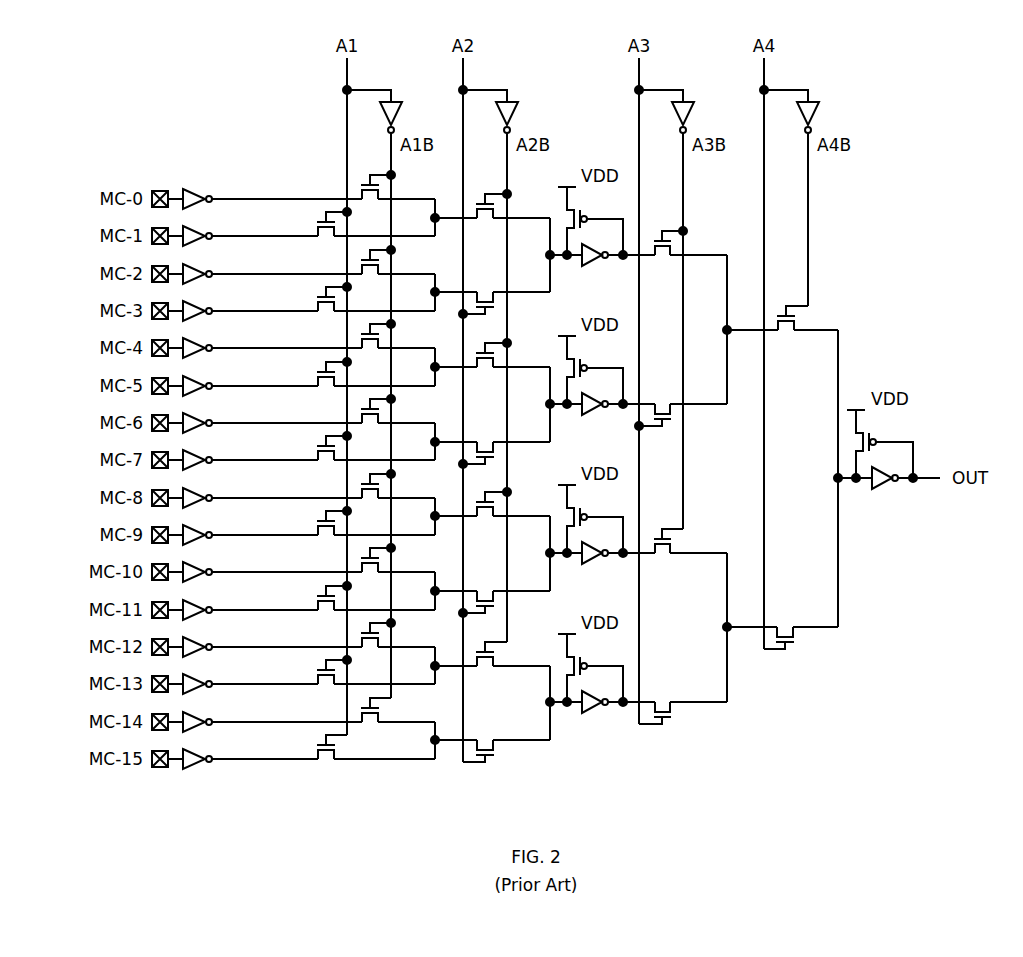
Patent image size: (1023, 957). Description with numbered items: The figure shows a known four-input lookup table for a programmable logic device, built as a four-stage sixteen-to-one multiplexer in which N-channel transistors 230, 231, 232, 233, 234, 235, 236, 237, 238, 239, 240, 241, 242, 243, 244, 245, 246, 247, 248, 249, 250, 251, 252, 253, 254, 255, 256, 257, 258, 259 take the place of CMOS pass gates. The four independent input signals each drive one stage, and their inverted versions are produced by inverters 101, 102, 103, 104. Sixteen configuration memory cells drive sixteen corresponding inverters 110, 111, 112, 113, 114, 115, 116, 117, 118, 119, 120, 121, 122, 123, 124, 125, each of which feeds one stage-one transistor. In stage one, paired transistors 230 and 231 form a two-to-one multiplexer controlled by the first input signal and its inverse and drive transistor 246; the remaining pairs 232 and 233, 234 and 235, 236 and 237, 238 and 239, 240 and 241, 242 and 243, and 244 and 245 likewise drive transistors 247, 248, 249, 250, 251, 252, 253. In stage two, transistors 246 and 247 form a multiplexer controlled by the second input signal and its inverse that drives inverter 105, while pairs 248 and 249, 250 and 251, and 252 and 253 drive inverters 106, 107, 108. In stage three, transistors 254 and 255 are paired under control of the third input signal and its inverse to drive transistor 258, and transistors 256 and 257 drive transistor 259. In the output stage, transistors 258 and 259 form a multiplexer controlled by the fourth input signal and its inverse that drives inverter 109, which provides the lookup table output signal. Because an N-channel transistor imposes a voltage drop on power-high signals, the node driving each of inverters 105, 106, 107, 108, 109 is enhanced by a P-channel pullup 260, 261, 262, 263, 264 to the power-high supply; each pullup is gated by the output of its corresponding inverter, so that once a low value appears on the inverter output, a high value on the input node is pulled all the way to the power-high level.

The inverter 101 is at (397, 119).
The inverter 102 is at (513, 119).
The inverter 103 is at (689, 119).
The inverter 104 is at (814, 119).
The inverter 105 is at (592, 265).
The inverter 106 is at (592, 414).
The inverter 107 is at (592, 563).
The inverter 108 is at (592, 712).
The inverter 109 is at (882, 488).
The inverter 110 is at (195, 194).
The inverter 111 is at (195, 231).
The inverter 112 is at (195, 269).
The inverter 113 is at (195, 306).
The inverter 114 is at (195, 343).
The inverter 115 is at (195, 381).
The inverter 116 is at (195, 418).
The inverter 117 is at (195, 455).
The inverter 118 is at (195, 493).
The inverter 119 is at (195, 530).
The inverter 120 is at (195, 567).
The inverter 121 is at (195, 605).
The inverter 122 is at (195, 642).
The inverter 123 is at (195, 679).
The inverter 124 is at (195, 717).
The inverter 125 is at (195, 754).
The N-channel transistor 230 is at (380, 193).
The N-channel transistor 231 is at (316, 228).
The N-channel transistor 232 is at (380, 268).
The N-channel transistor 233 is at (316, 303).
The N-channel transistor 234 is at (380, 342).
The N-channel transistor 235 is at (316, 378).
The N-channel transistor 236 is at (380, 417).
The N-channel transistor 237 is at (316, 452).
The N-channel transistor 238 is at (380, 492).
The N-channel transistor 239 is at (316, 527).
The N-channel transistor 240 is at (380, 566).
The N-channel transistor 241 is at (316, 602).
The N-channel transistor 242 is at (380, 641).
The N-channel transistor 243 is at (316, 676).
The N-channel transistor 244 is at (380, 716).
The N-channel transistor 245 is at (316, 751).
The N-channel transistor 246 is at (495, 212).
The N-channel transistor 247 is at (495, 299).
The N-channel transistor 248 is at (495, 361).
The N-channel transistor 249 is at (495, 449).
The N-channel transistor 250 is at (495, 510).
The N-channel transistor 251 is at (495, 598).
The N-channel transistor 252 is at (495, 660).
The N-channel transistor 253 is at (495, 747).
The N-channel transistor 254 is at (672, 249).
The N-channel transistor 255 is at (672, 411).
The N-channel transistor 256 is at (672, 547).
The N-channel transistor 257 is at (672, 709).
The N-channel transistor 258 is at (796, 324).
The N-channel transistor 259 is at (795, 634).
The pullup 260 is at (574, 205).
The pullup 261 is at (574, 354).
The pullup 262 is at (574, 503).
The pullup 263 is at (574, 652).
The pullup 264 is at (863, 428).